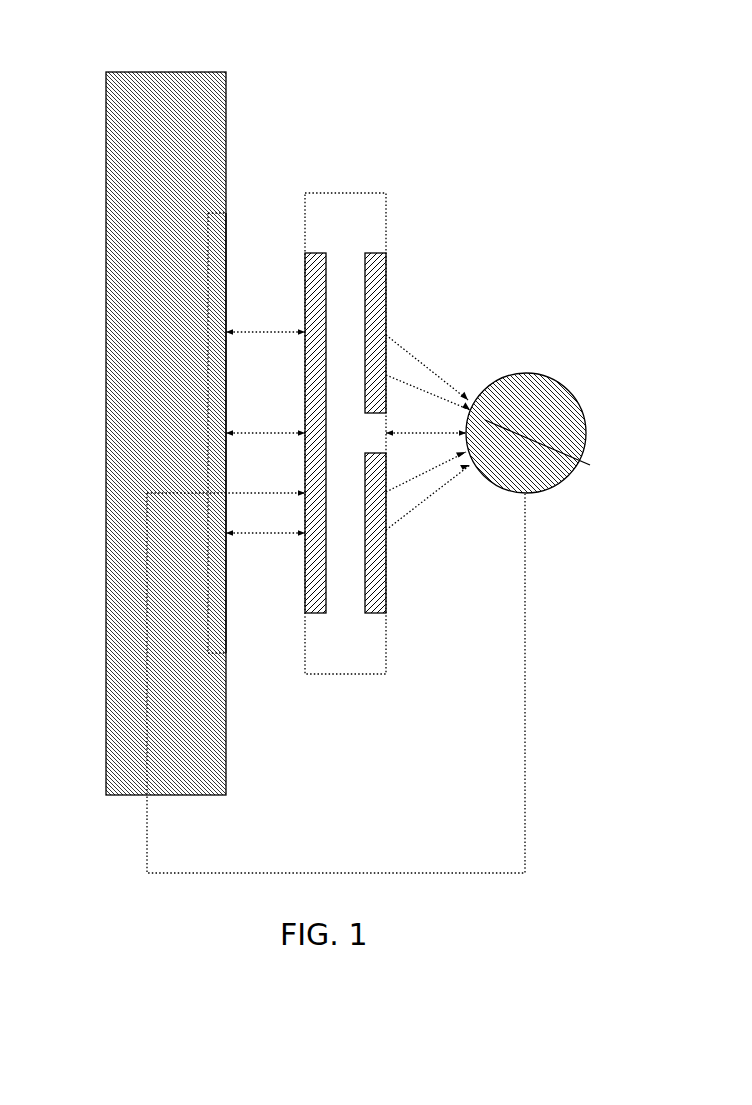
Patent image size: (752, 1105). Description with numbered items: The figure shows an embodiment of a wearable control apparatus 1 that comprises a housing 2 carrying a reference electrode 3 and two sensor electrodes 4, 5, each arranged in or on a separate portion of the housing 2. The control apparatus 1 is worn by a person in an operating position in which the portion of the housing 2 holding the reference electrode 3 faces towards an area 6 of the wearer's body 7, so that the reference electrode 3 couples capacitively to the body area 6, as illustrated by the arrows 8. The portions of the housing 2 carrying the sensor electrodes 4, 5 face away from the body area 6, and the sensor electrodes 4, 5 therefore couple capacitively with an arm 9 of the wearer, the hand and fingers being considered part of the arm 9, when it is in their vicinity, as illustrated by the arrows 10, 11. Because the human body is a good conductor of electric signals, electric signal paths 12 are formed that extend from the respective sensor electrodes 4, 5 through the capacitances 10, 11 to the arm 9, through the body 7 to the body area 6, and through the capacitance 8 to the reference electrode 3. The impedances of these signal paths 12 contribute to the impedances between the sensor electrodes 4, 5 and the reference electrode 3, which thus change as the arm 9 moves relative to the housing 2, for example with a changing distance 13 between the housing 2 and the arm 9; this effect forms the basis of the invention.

The control apparatus 1 is at (413, 153).
The housing 2 is at (387, 212).
The reference electrode 3 is at (315, 257).
The sensor electrode 4 is at (377, 293).
The sensor electrode 5 is at (375, 575).
The body area 6 is at (226, 593).
The body 7 is at (140, 135).
The arrows 8 is at (265, 420).
The arm 9 is at (558, 412).
The arrows 10 is at (435, 362).
The arrows 11 is at (440, 505).
The electric signal paths 12 is at (143, 592).
The distance 13 is at (433, 438).